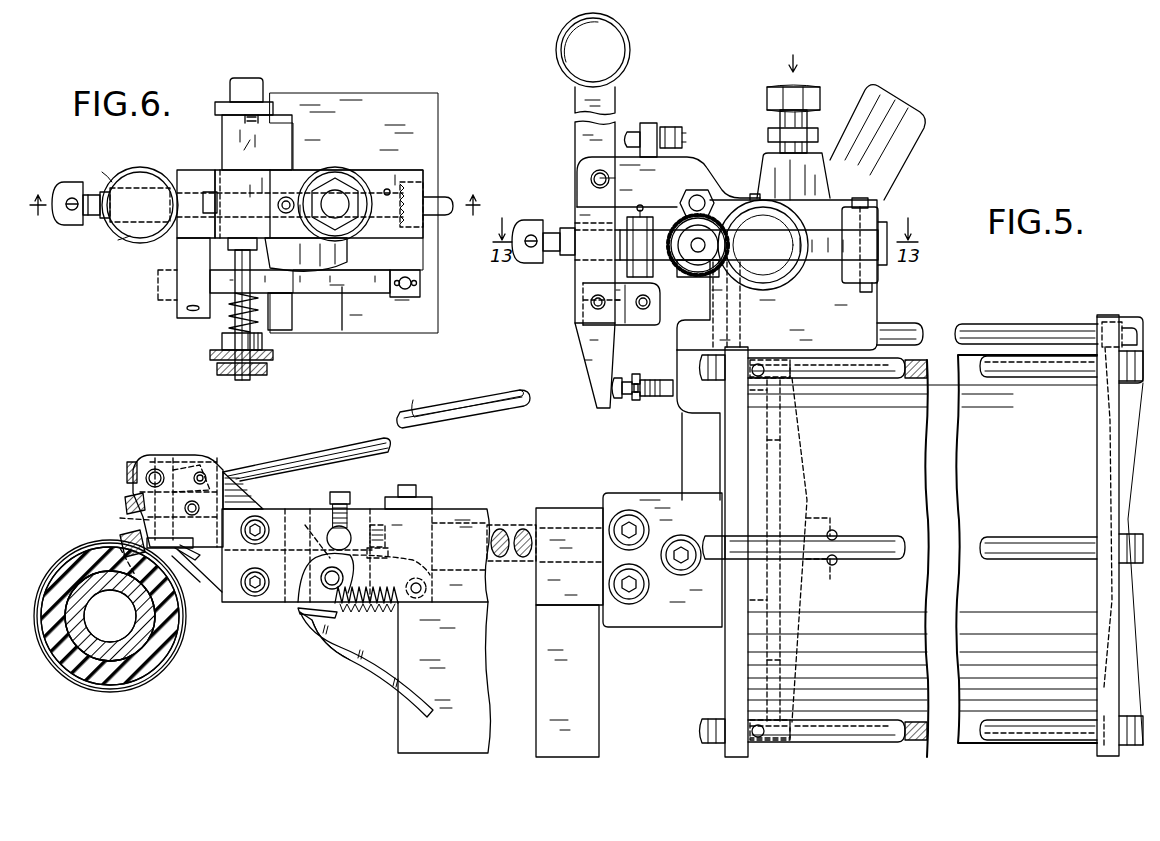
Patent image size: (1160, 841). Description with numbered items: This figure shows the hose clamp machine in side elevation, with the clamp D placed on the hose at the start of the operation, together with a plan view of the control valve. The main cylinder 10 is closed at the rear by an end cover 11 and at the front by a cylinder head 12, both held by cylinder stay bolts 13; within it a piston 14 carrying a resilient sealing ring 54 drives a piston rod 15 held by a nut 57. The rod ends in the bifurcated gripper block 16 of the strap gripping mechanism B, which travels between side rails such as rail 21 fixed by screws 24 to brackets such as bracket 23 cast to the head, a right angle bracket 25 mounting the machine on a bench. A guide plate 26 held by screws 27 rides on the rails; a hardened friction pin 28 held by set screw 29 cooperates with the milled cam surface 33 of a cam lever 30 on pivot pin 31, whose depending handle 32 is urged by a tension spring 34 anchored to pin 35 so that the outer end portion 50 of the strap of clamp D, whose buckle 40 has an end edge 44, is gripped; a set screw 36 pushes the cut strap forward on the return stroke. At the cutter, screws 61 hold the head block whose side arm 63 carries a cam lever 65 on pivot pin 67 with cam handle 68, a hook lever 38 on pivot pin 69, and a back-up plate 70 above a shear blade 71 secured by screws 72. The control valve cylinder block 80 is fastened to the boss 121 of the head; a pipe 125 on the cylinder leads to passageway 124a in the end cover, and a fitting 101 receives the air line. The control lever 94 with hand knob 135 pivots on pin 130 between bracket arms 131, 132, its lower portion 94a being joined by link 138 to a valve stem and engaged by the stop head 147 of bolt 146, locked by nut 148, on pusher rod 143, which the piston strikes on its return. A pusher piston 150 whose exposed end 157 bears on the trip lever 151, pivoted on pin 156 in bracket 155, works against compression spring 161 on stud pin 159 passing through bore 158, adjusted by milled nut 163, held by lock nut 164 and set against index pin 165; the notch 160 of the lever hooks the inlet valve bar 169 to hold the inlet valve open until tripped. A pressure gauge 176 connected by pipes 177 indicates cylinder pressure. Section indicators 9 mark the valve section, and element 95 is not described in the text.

In FIG. 6, the pipes 177 is at (249, 78).
In FIG. 6, the cylinder block 80 is at (216, 166).
In FIG. 5, the cylinder block 80 is at (726, 183).
In FIG. 6, the inlet valve bar 169 is at (185, 168).
In FIG. 5, the inlet valve bar 169 is at (630, 264).
In FIG. 6, the bracket arm 131 is at (118, 170).
In FIG. 6, the hand knob 135 is at (108, 176).
In FIG. 5, the hand knob 135 is at (630, 55).
In FIG. 6, the bracket arm 132 is at (118, 238).
In FIG. 5, the bracket arm 132 is at (625, 160).
In FIG. 6, the knob 95 is at (72, 225).
In FIG. 5, the knob 95 is at (533, 263).
In FIG. 6, the section line 9 is at (255, 195).
In FIG. 6, the fitting 101 is at (337, 182).
In FIG. 5, the fitting 101 is at (780, 115).
In FIG. 6, the pipe 125 is at (430, 192).
In FIG. 5, the pipe 125 is at (1003, 324).
In FIG. 6, the notch 160 is at (218, 272).
In FIG. 6, the exposed end 157 is at (304, 272).
In FIG. 6, the mounting bracket 155 is at (416, 296).
In FIG. 5, the mounting bracket 155 is at (878, 218).
In FIG. 6, the pivot pin 156 is at (403, 277).
In FIG. 5, the pivot pin 156 is at (864, 200).
In FIG. 6, the bore 158 is at (250, 283).
In FIG. 6, the pusher piston 150 is at (345, 262).
In FIG. 5, the pusher piston 150 is at (772, 218).
In FIG. 6, the trip lever 151 is at (340, 292).
In FIG. 5, the trip lever 151 is at (816, 258).
In FIG. 6, the stud pin 159 is at (236, 324).
In FIG. 5, the stud pin 159 is at (694, 240).
In FIG. 6, the helical compression spring 161 is at (258, 318).
In FIG. 6, the milled nut 163 is at (270, 362).
In FIG. 5, the milled nut 163 is at (694, 277).
In FIG. 6, the lock nut 164 is at (215, 370).
In FIG. 5, the lock nut 164 is at (732, 243).
In FIG. 5, the control lever 94 is at (575, 138).
In FIG. 5, the lower portion of lever 94a is at (588, 366).
In FIG. 5, the pivot pin 130 is at (590, 180).
In FIG. 5, the index pin 165 is at (697, 195).
In FIG. 5, the pressure gauge 176 is at (898, 110).
In FIG. 5, the link 138 is at (615, 310).
In FIG. 5, the boss 121 is at (703, 420).
In FIG. 5, the lock nut 148 is at (636, 374).
In FIG. 5, the adjustable stop head 147 is at (614, 392).
In FIG. 5, the adjustable bolt 146 is at (630, 394).
In FIG. 5, the pusher rod 143 is at (653, 396).
In FIG. 5, the cylinder head 12 is at (727, 674).
In FIG. 5, the cylinder stay bolts 13 is at (885, 378).
In FIG. 5, the cylinder 10 is at (1034, 652).
In FIG. 5, the end cover 11 is at (1119, 634).
In FIG. 5, the passageway 124a is at (1100, 398).
In FIG. 5, the piston 14 is at (790, 447).
In FIG. 5, the nut 57 is at (828, 572).
In FIG. 5, the piston rod 15 is at (835, 530).
In FIG. 5, the resilient sealing ring 54 is at (760, 737).
In FIG. 5, the mounting bracket 23 is at (662, 612).
In FIG. 5, the screws 24 is at (645, 588).
In FIG. 5, the side rail 21 is at (574, 594).
In FIG. 5, the right angle bracket 25 is at (600, 714).
In FIG. 5, the gripper block 16 is at (430, 525).
In FIG. 5, the screws 61 is at (264, 520).
In FIG. 5, the cam surface 33 is at (309, 535).
In FIG. 5, the set screw 29 is at (340, 492).
In FIG. 5, the friction pin 28 is at (345, 530).
In FIG. 5, the strap gripping mechanism B is at (322, 500).
In FIG. 5, the screws 27 is at (407, 485).
In FIG. 5, the guide plate 26 is at (422, 503).
In FIG. 5, the set screw 36 is at (378, 560).
In FIG. 5, the pivot pin 31 is at (323, 582).
In FIG. 5, the helical tension spring 34 is at (377, 606).
In FIG. 5, the pin 35 is at (420, 600).
In FIG. 5, the handle 32 is at (376, 662).
In FIG. 5, the cam lever 30 is at (335, 645).
In FIG. 5, the cam handle 68 is at (326, 452).
In FIG. 5, the side arm 63 is at (170, 455).
In FIG. 5, the pivot pin 67 is at (152, 470).
In FIG. 5, the pivot pin 69 is at (196, 503).
In FIG. 5, the cam lever 65 is at (127, 468).
In FIG. 5, the hook lever 38 is at (128, 500).
In FIG. 5, the screws 72 is at (122, 517).
In FIG. 5, the back-up plate 70 is at (185, 540).
In FIG. 5, the end edge 44 is at (120, 540).
In FIG. 5, the outer end portion of the strap 50 is at (208, 585).
In FIG. 5, the hose clamp D is at (147, 690).
In FIG. 5, the buckle 40 is at (120, 578).
In FIG. 5, the shear blade 71 is at (137, 600).